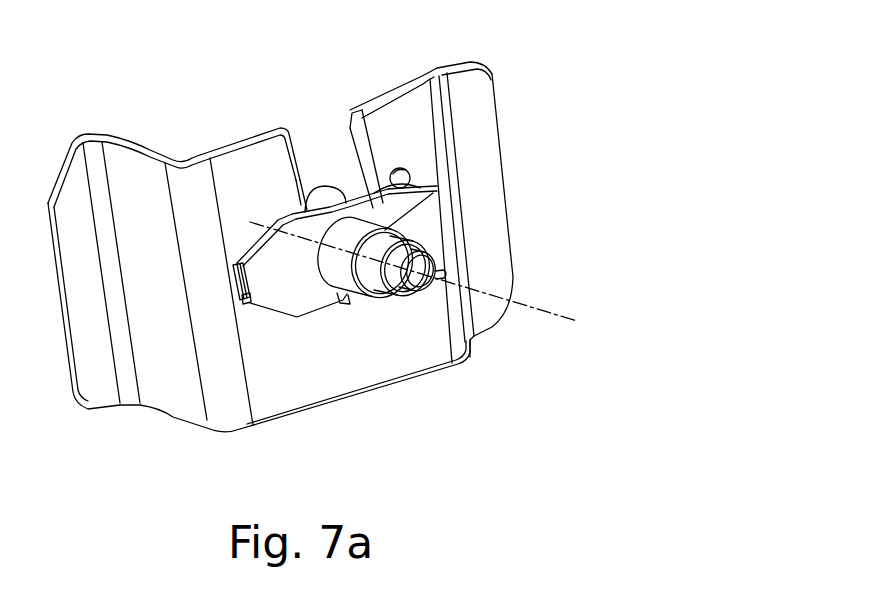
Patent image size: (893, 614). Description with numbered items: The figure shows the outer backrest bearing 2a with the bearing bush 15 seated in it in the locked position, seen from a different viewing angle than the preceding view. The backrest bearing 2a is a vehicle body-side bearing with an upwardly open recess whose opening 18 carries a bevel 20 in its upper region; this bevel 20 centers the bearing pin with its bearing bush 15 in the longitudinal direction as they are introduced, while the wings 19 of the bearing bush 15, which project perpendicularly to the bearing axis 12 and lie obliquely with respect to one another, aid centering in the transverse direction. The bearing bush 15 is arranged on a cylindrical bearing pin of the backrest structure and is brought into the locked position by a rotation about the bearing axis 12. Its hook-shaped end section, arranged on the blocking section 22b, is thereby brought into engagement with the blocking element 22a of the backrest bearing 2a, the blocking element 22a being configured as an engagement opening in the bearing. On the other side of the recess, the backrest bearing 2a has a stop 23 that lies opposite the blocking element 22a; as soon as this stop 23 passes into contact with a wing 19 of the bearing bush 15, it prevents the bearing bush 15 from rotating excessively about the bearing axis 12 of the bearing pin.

The outer backrest bearing 2a is at (142, 178).
The opening 18 is at (327, 155).
The bevel 20 is at (350, 110).
The wing 19 is at (437, 193).
The stop 23 is at (398, 168).
The bearing axis 12 is at (550, 313).
The bearing bush 15 is at (395, 282).
The blocking element 22a is at (240, 300).
The blocking section 22b is at (247, 300).